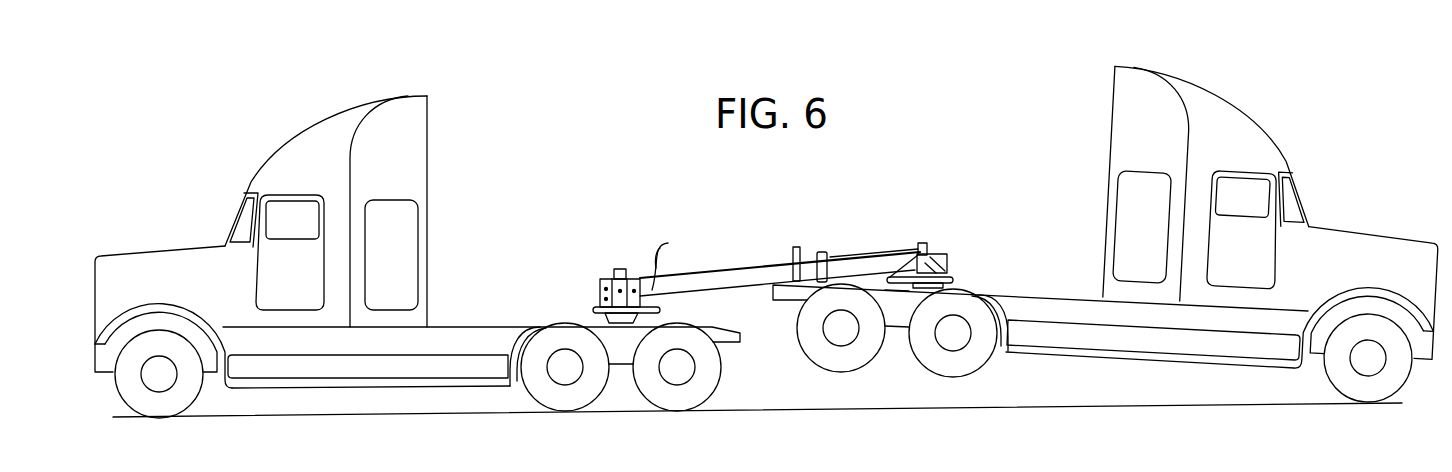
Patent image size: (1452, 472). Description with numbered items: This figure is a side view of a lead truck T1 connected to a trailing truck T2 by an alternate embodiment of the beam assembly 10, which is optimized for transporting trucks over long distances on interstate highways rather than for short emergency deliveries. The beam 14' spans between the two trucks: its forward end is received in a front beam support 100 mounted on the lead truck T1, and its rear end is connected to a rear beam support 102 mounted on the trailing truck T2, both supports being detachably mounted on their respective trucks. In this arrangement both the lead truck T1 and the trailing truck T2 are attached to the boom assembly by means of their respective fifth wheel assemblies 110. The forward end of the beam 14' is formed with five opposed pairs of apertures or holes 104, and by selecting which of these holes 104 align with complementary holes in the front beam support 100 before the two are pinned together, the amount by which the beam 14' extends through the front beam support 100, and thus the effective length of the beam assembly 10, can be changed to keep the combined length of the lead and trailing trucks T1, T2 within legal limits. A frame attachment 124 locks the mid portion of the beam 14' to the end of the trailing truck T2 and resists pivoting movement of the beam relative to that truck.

The beam assembly 10 is at (778, 247).
The beam 14' is at (780, 252).
The front beam support 100 is at (607, 278).
The rear beam support 102 is at (927, 247).
The apertures or holes 104 is at (683, 259).
The fifth wheel assembly 110 is at (597, 308).
The frame attachment 124 is at (823, 249).
The lead truck T1 is at (283, 125).
The trailing truck T2 is at (1280, 110).